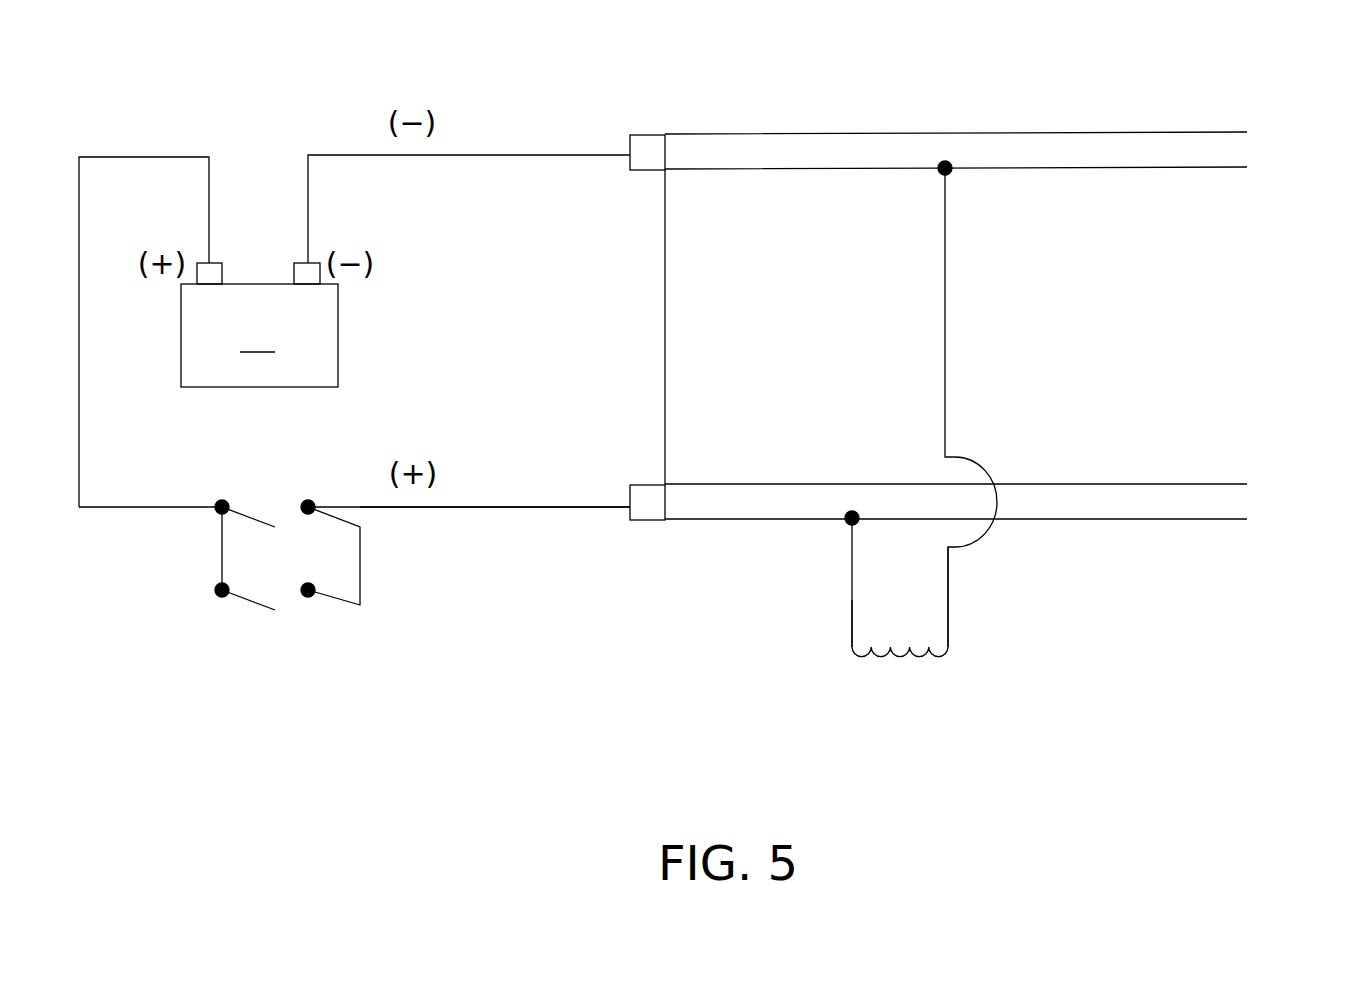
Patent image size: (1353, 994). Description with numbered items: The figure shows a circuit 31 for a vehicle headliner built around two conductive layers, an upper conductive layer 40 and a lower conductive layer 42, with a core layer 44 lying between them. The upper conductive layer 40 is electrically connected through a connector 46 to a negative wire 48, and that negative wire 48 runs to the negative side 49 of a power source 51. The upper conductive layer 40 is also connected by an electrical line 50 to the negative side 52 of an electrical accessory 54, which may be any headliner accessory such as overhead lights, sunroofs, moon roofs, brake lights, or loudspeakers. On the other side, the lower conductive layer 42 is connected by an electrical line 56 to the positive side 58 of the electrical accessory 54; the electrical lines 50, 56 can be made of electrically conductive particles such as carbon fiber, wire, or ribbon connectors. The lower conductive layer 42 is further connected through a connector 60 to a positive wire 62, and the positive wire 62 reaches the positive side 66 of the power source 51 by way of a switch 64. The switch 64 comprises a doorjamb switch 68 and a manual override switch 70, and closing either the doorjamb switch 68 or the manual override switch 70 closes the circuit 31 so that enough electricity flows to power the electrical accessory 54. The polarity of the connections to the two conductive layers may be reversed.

The circuit 31 is at (465, 625).
The upper conductive layer 40 is at (1208, 150).
The lower conductive layer 42 is at (1210, 500).
The core layer 44 is at (1208, 325).
The connector 46 is at (647, 130).
The negative wire 48 is at (572, 150).
The negative side of power source 49 is at (290, 258).
The electrical line 50 is at (935, 260).
The power source 51 is at (259, 335).
The negative side of electrical accessory 52 is at (958, 627).
The electrical accessory 54 is at (902, 658).
The electrical line 56 is at (847, 575).
The positive side of electrical accessory 58 is at (847, 640).
The connector 60 is at (650, 533).
The positive wire 62 is at (573, 495).
The switch 64 is at (219, 583).
The positive side of power source 66 is at (225, 258).
The doorjamb switch 68 is at (250, 507).
The manual override switch 70 is at (253, 608).